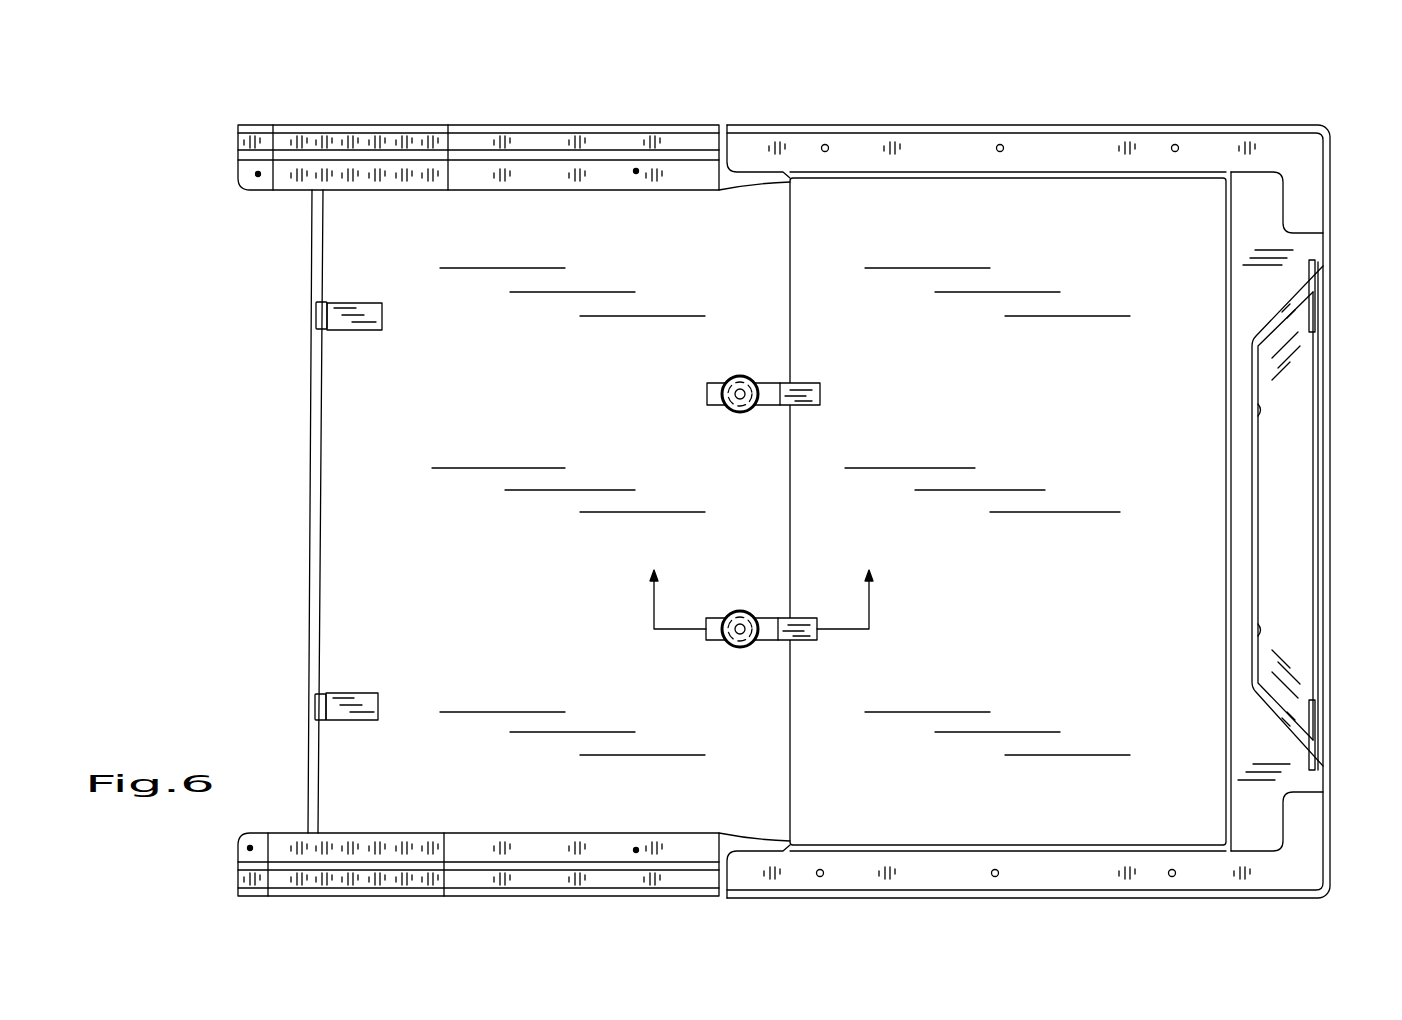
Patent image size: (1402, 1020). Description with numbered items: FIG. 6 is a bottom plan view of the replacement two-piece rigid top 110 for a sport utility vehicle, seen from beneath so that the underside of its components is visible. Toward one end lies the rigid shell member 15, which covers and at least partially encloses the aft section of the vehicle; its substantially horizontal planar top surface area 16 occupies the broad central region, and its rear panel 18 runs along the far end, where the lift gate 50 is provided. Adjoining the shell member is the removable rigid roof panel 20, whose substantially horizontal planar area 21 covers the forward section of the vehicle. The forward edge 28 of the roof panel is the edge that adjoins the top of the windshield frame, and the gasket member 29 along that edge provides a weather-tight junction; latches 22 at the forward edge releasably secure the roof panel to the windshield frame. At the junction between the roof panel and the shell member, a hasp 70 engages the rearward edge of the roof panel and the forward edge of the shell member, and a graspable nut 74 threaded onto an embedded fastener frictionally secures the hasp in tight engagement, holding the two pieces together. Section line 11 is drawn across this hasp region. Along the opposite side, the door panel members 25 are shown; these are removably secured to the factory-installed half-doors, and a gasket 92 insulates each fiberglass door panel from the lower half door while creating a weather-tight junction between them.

The two-piece top 110 is at (751, 101).
The rigid shell member 15 is at (941, 124).
The top surface area 16 is at (1101, 412).
The rear panel 18 is at (1312, 248).
The rigid roof panel 20 is at (310, 421).
The planar area 21 is at (533, 396).
The latches 22 is at (320, 316).
The door panel members 25 is at (470, 123).
The forward edge 28 is at (320, 487).
The gasket member 29 is at (310, 540).
The lift gate 50 is at (1290, 395).
The hasp 70 is at (800, 383).
The graspable nut 74 is at (740, 375).
The gasket 92 is at (318, 140).
The section line 11 is at (767, 583).